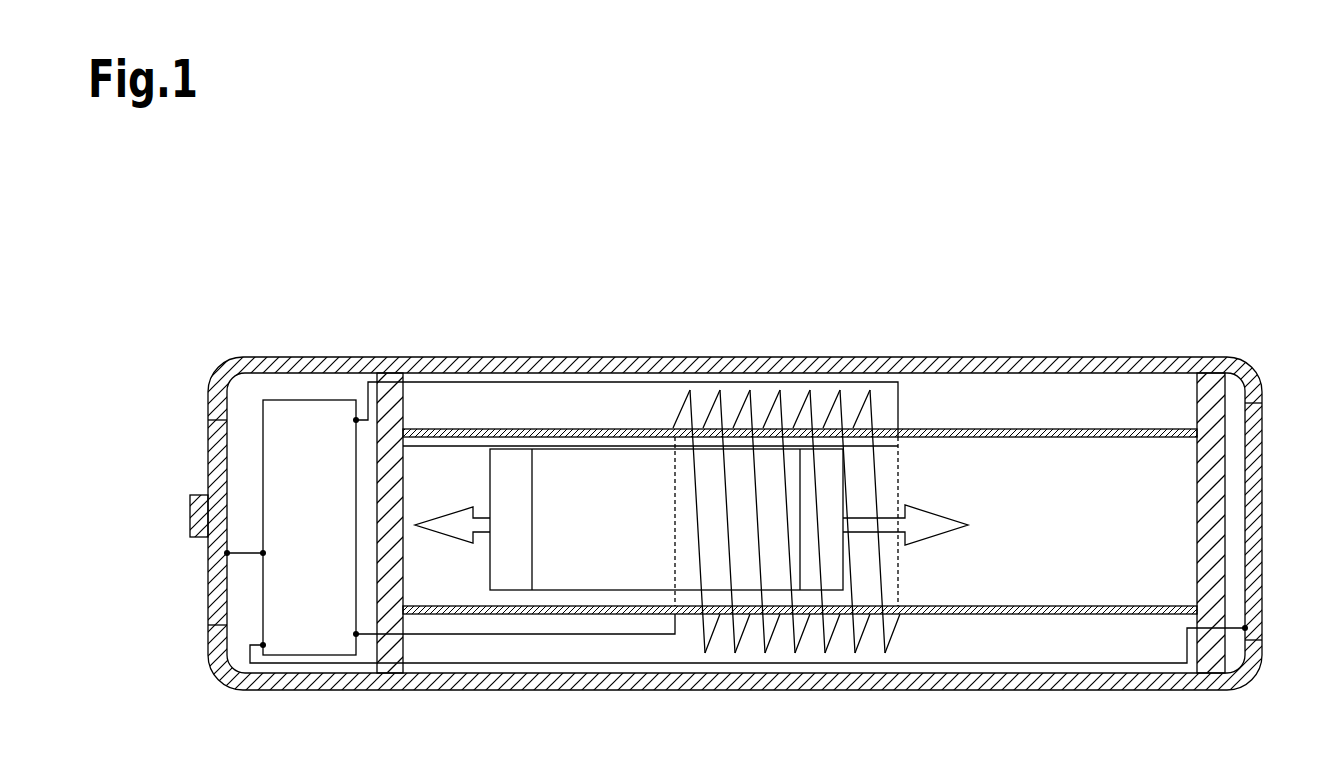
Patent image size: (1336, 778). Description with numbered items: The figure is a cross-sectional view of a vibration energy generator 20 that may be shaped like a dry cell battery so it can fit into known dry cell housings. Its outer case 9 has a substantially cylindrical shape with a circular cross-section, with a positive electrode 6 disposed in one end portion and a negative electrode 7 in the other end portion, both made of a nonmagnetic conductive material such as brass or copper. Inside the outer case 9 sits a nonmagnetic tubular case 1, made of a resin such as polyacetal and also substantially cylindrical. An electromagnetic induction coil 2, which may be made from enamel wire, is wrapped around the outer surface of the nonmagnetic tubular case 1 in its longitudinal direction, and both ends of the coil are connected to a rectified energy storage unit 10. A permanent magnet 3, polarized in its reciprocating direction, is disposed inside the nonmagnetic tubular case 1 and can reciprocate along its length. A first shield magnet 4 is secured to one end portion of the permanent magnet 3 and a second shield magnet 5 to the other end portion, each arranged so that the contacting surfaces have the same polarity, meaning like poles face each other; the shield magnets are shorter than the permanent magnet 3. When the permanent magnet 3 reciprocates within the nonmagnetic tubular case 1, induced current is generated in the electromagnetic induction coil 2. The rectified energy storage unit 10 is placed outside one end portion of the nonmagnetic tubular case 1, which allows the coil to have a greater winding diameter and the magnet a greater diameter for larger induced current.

The nonmagnetic tubular case 1 is at (1090, 428).
The electromagnetic induction coil 2 is at (893, 628).
The permanent magnet 3 is at (597, 460).
The first shield magnet 4 is at (829, 458).
The second shield magnet 5 is at (510, 462).
The positive electrode 6 is at (212, 455).
The negative electrode 7 is at (1262, 506).
The outer case 9 is at (573, 372).
The rectified energy storage unit 10 is at (318, 372).
The vibration energy generator 20 is at (768, 262).